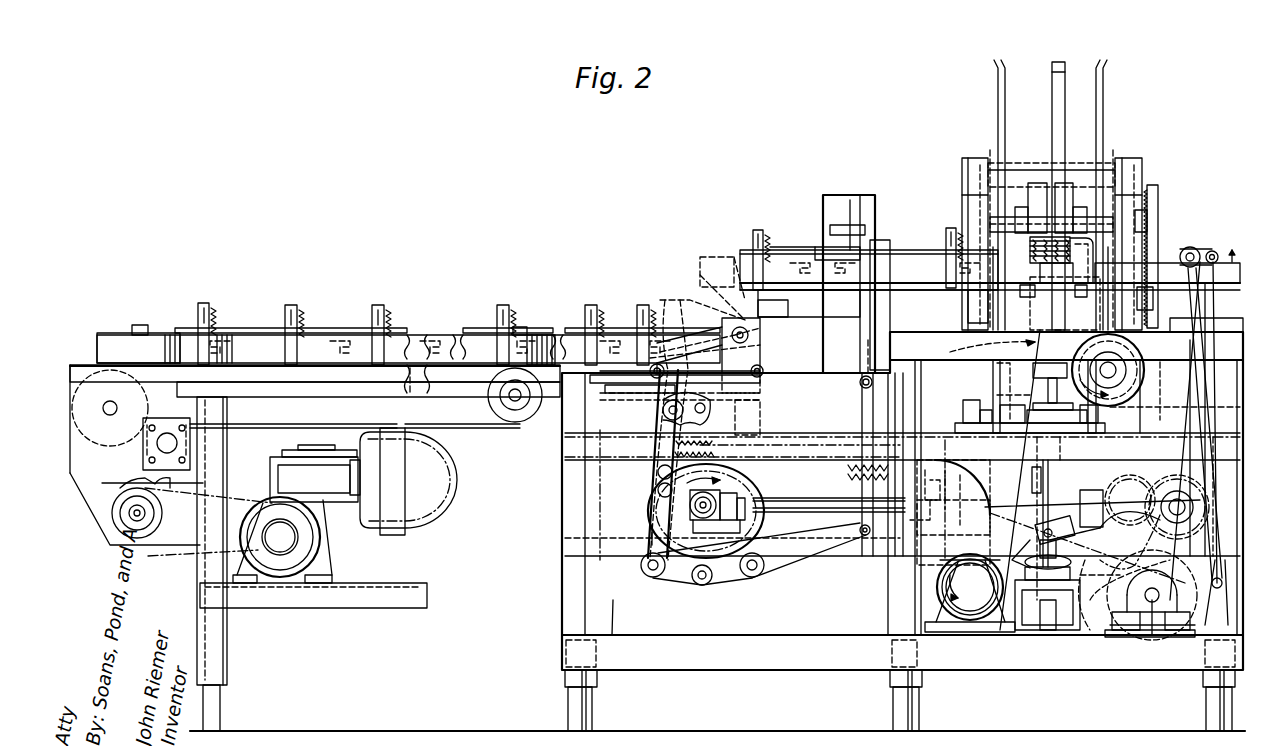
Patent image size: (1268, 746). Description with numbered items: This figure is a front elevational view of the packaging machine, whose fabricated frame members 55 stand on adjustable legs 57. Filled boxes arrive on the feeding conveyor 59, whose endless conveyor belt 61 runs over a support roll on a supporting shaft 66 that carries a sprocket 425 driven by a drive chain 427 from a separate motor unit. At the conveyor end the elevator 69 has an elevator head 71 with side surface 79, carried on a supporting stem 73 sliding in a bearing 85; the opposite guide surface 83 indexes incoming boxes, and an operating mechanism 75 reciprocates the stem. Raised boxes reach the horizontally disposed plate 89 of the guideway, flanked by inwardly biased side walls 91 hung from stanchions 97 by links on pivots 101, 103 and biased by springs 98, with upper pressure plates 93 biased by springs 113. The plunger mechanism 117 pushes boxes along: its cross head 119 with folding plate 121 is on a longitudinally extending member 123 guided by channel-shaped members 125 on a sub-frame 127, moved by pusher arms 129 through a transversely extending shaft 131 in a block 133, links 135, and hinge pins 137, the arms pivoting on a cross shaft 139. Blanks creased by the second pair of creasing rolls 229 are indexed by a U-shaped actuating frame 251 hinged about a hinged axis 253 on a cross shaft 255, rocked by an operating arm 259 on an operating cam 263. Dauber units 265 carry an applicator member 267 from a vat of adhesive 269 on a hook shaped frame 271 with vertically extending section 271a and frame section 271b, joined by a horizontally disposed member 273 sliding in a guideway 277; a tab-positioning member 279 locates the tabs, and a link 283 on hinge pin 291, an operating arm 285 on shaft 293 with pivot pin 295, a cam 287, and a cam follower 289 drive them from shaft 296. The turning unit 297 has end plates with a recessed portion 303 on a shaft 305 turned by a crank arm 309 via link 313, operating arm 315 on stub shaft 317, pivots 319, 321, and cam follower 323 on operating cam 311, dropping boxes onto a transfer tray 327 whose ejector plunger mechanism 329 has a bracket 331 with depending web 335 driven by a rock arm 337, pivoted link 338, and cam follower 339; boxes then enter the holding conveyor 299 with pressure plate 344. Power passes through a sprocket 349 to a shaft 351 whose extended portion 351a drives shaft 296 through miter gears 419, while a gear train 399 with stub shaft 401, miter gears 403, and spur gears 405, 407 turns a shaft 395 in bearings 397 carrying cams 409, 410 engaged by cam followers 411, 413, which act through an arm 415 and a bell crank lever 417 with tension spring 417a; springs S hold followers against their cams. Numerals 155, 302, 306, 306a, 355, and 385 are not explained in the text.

The frame members 55 is at (750, 430).
The legs 57 is at (578, 712).
The feeding conveyor 59 is at (1232, 325).
The conveyor belt 61 is at (1185, 298).
The supporting shaft 66 is at (1140, 370).
The elevator 69 is at (1000, 370).
The elevator head 71 is at (1033, 372).
The supporting stem 73 is at (1043, 392).
The operating mechanism 75 is at (1090, 507).
The side surface 79 is at (1062, 320).
The guide surface 83 is at (1030, 300).
The bearing 85 is at (1020, 435).
The horizontally disposed plate 89 is at (902, 292).
The side walls 91 is at (960, 268).
The upper pressure plates 93 is at (790, 248).
The stanchions 97 is at (378, 312).
The springs 98 is at (295, 348).
The pivots 101 is at (1148, 112).
The pivots 103 is at (1062, 65).
The springs 113 is at (762, 258).
The plunger mechanism 117 is at (1232, 250).
The cross head 119 is at (1080, 280).
The folding plate 121 is at (975, 600).
The longitudinally extending member 123 is at (952, 615).
The channel-shaped members 125 is at (1120, 268).
The sub-frame 127 is at (1212, 300).
The pusher arms 129 is at (424, 520).
The transversely extending shaft 131 is at (1210, 250).
The block 133 is at (1178, 252).
The links 135 is at (1212, 250).
The hinge pins 137 is at (1228, 258).
The cross shaft 139 is at (1195, 510).
The frame member 155 is at (615, 555).
The second pair of creasing rolls 229 is at (1035, 182).
The U-shaped actuating frame 251 is at (1000, 385).
The hinged axis 253 is at (1082, 255).
The cross shaft 255 is at (972, 412).
The operating arm 259 is at (1032, 490).
The operating cam 263 is at (950, 585).
The dauber units 265 is at (846, 192).
The applicator member 267 is at (815, 252).
The vat of adhesive 269 is at (838, 295).
The hook shaped frame 271 is at (880, 240).
The vertically extending section 271a is at (868, 360).
The frame section 271b is at (840, 225).
The horizontally disposed member 273 is at (868, 370).
The guideway 277 is at (880, 404).
The tab-positioning member 279 is at (848, 225).
The link 283 is at (878, 418).
The operating arm 285 is at (770, 572).
The cam 287 is at (695, 588).
The cam follower 289 is at (703, 590).
The hinge pin 291 is at (858, 382).
The shaft 293 is at (752, 580).
The pivot pin 295 is at (866, 545).
The shaft 296 is at (735, 472).
The turning unit 297 is at (727, 246).
The holding conveyor 299 is at (530, 320).
The clamp post 302 is at (470, 310).
The recessed portion 303 is at (705, 443).
The shaft 305 is at (755, 335).
The clamp post 306 is at (425, 345).
The belt 306a is at (465, 408).
The crank arm 309 is at (745, 362).
The operating cam 311 is at (745, 492).
The link 313 is at (745, 350).
The operating arm 315 is at (660, 410).
The stub shaft 317 is at (652, 577).
The pivot 319 is at (764, 372).
The pivot 321 is at (640, 305).
The cam follower 323 is at (650, 505).
The transfer tray 327 is at (655, 345).
The ejector plunger mechanism 329 is at (704, 322).
The bracket 331 is at (675, 315).
The depending web 335 is at (700, 405).
The rock arm 337 is at (656, 471).
The pivoted link 338 is at (660, 420).
The cam follower 339 is at (640, 375).
The pressure plate 344 is at (345, 322).
The sprocket 349 is at (962, 460).
The shaft 351 is at (1093, 435).
The extended portion 351a is at (855, 510).
The line 355 is at (870, 450).
The arc guide 385 is at (972, 462).
The shaft 395 is at (1170, 640).
The bearings 397 is at (1152, 630).
The gear train 399 is at (1210, 510).
The stub shaft 401 is at (1175, 475).
The miter gears 403 is at (1120, 465).
The spur gear 405 is at (1128, 485).
The spur gear 407 is at (1120, 630).
The cam 409 is at (1088, 640).
The cam 410 is at (1120, 630).
The cam follower 411 is at (1098, 555).
The cam follower 413 is at (1200, 600).
The arm 415 is at (1062, 605).
The bell crank lever 417 is at (1220, 525).
The tension spring 417a is at (1090, 600).
The miter gears 419 is at (755, 520).
The sprocket 425 is at (1130, 390).
The drive chain 427 is at (1038, 530).
The tension spring S is at (660, 456).